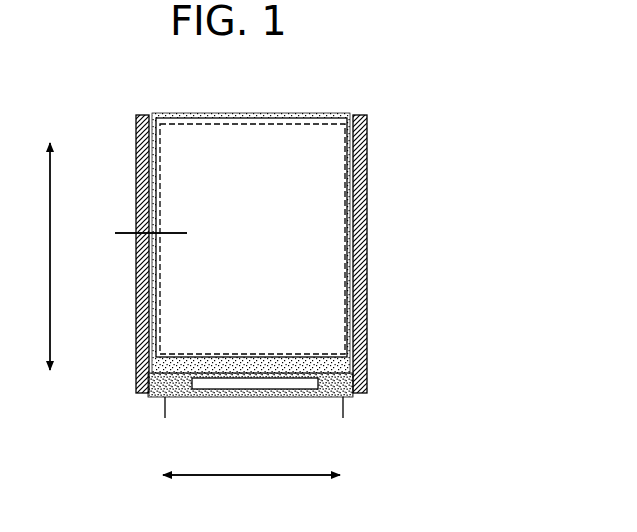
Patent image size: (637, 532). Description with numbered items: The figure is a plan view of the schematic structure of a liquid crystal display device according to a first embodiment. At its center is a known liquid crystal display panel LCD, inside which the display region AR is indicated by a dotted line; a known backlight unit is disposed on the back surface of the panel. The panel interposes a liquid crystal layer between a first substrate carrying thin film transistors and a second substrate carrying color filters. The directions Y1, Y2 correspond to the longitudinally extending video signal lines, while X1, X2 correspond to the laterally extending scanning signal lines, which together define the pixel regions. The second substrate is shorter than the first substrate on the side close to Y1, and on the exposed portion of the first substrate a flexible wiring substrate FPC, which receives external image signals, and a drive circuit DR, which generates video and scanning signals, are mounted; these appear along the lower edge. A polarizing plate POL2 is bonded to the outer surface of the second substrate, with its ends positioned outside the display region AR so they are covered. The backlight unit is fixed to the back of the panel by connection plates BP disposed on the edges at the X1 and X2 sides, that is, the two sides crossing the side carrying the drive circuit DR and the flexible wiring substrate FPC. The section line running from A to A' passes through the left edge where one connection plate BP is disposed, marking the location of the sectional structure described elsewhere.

The liquid crystal display panel LCD is at (322, 218).
The polarizing plate POL2 is at (327, 268).
The display region AR is at (252, 239).
The connection plate BP is at (137, 142).
The flexible wiring substrate FPC is at (186, 410).
The drive circuit DR is at (282, 382).
The section line A is at (141, 235).
The section line A' is at (164, 235).
The scanning signal line direction X1 is at (236, 476).
The scanning signal line direction X2 is at (268, 476).
The video signal line direction Y1 is at (52, 274).
The video signal line direction Y2 is at (52, 244).